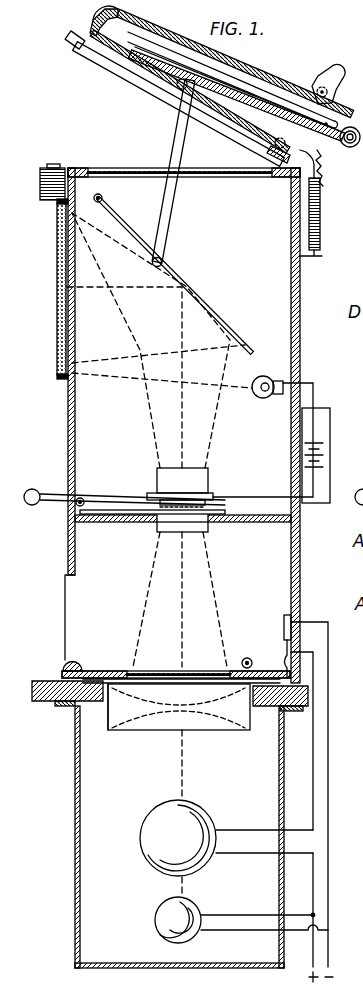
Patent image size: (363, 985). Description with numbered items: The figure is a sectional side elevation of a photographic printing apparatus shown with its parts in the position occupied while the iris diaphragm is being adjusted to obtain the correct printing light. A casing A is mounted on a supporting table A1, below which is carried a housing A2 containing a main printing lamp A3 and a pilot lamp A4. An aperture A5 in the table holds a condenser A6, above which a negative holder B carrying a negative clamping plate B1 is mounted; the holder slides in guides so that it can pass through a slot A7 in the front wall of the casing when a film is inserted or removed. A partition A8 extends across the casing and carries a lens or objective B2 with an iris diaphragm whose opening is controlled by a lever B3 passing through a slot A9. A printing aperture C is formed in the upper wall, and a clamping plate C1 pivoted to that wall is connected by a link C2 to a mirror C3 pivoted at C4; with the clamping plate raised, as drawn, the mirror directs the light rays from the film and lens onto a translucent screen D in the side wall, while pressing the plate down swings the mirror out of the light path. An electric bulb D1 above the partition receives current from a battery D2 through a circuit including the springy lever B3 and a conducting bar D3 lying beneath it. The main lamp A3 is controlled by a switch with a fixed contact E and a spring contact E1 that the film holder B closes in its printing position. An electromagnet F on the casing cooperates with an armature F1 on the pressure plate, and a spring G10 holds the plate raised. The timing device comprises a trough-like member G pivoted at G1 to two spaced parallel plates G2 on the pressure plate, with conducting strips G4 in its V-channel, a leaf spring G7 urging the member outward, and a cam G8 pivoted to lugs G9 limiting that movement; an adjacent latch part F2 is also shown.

The casing A is at (302, 560).
The supporting platform or table A1 is at (52, 681).
The housing A2 is at (77, 877).
The main printing lamp A3 is at (160, 840).
The pilot lamp A4 is at (167, 920).
The aperture A5 is at (104, 705).
The condenser A6 is at (158, 720).
The slot A7 is at (68, 577).
The partition A8 is at (257, 518).
The slot A9 is at (78, 504).
The negative holder B is at (242, 700).
The negative clamping plate B1 is at (117, 663).
The lens or objective B2 is at (167, 523).
The lever B3 is at (53, 492).
The printing aperture C is at (153, 170).
The clamping plate C1 is at (133, 80).
The link C2 is at (185, 137).
The mirror C3 is at (222, 320).
The pivot C4 is at (100, 194).
The translucent screen D is at (62, 315).
The electric bulb D1 is at (260, 398).
The battery D2 is at (330, 457).
The conducting bar D3 is at (82, 514).
The fixed contact E is at (286, 650).
The spring contact E1 is at (285, 634).
The electromagnet F is at (50, 166).
The armature F1 is at (77, 48).
The spring F2 is at (335, 184).
The trough-like member G is at (95, 25).
The pivot G1 is at (102, 57).
The spaced parallel plates G2 is at (248, 123).
The electric conducting strips G4 is at (167, 60).
The leaf spring G7 is at (233, 110).
The cam G8 is at (337, 84).
The lugs G9 is at (316, 92).
The spring G10 is at (320, 228).